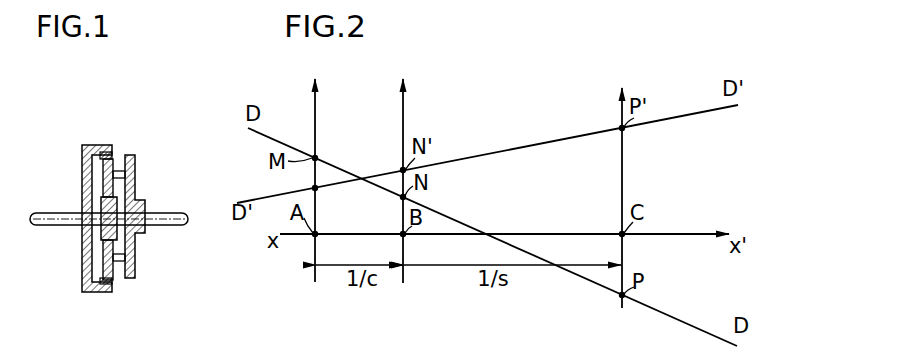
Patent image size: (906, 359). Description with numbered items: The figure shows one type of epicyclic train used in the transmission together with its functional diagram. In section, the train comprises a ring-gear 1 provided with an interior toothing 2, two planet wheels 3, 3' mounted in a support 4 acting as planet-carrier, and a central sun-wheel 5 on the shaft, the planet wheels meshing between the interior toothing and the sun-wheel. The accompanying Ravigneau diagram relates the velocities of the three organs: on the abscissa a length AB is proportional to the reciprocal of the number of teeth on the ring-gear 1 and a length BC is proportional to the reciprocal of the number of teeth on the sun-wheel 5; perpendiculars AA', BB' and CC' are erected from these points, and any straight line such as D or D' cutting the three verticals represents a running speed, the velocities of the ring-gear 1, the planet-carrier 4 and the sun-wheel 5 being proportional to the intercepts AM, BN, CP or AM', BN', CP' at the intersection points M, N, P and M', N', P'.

In FIG. 1, the ring-gear 1 is at (81, 189).
In FIG. 2, the ring-gear 1 is at (316, 132).
In FIG. 1, the interior toothing 2 is at (100, 150).
In FIG. 1, the planet wheel 3 is at (122, 154).
In FIG. 1, the planet wheel 3' is at (122, 278).
In FIG. 1, the support 4 is at (135, 178).
In FIG. 2, the support 4 is at (404, 120).
In FIG. 1, the sun-wheel 5 is at (102, 227).
In FIG. 2, the sun-wheel 5 is at (623, 164).